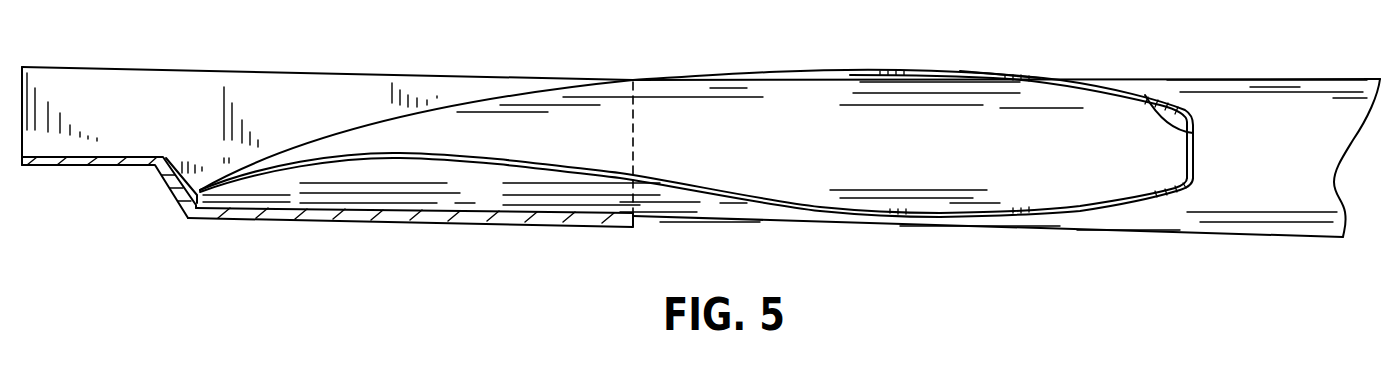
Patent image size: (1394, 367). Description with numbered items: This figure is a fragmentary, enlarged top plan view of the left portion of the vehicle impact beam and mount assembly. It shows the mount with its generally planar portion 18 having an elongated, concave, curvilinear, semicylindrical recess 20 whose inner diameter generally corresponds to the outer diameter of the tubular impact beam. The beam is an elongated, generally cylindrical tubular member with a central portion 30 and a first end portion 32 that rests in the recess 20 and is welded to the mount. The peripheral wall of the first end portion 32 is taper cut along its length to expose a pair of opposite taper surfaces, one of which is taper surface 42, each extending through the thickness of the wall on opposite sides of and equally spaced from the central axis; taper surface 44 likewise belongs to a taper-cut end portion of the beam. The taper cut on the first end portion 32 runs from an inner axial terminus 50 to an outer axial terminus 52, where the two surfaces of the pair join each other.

The planar portion 18 is at (128, 167).
The semicylindrical recess 20 is at (240, 208).
The central portion 30 is at (1338, 93).
The first end portion 32 is at (784, 54).
The taper surface 42 is at (730, 192).
The taper surface 44 is at (992, 74).
The inner axial terminus 50 is at (1145, 94).
The outer axial terminus 52 is at (193, 200).